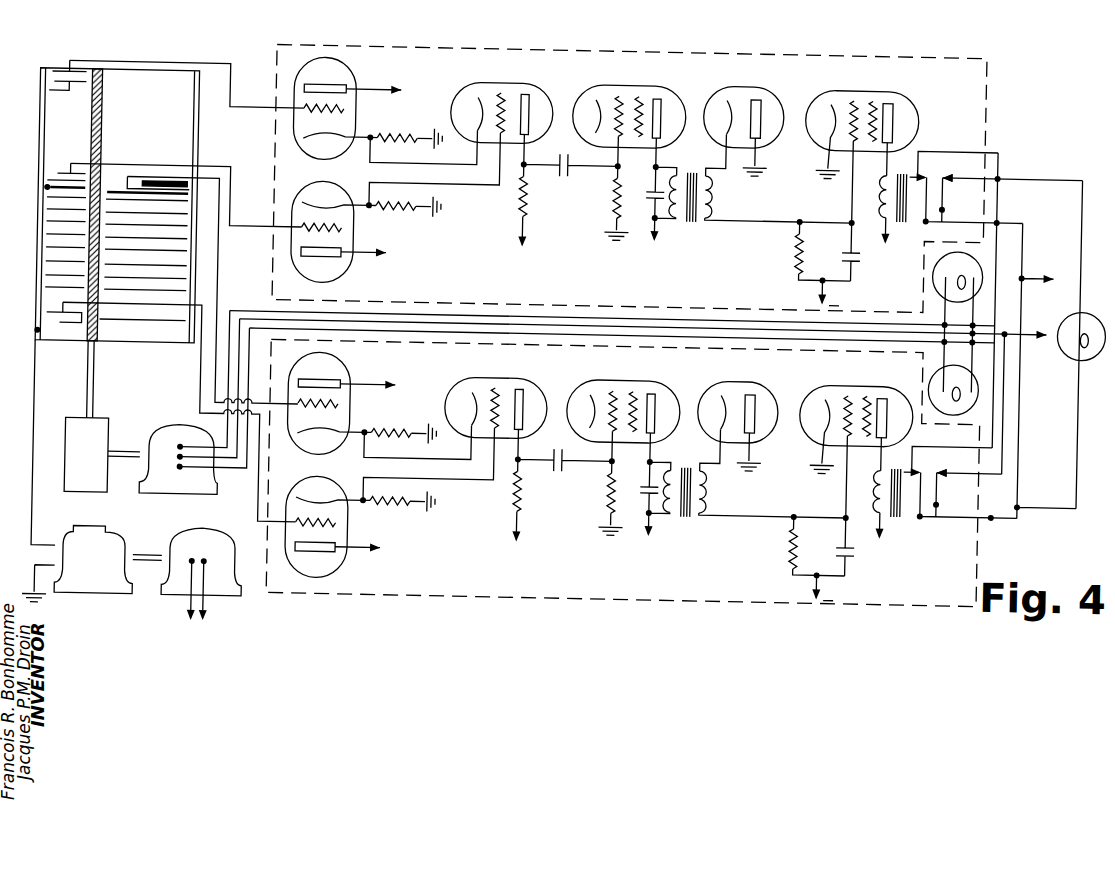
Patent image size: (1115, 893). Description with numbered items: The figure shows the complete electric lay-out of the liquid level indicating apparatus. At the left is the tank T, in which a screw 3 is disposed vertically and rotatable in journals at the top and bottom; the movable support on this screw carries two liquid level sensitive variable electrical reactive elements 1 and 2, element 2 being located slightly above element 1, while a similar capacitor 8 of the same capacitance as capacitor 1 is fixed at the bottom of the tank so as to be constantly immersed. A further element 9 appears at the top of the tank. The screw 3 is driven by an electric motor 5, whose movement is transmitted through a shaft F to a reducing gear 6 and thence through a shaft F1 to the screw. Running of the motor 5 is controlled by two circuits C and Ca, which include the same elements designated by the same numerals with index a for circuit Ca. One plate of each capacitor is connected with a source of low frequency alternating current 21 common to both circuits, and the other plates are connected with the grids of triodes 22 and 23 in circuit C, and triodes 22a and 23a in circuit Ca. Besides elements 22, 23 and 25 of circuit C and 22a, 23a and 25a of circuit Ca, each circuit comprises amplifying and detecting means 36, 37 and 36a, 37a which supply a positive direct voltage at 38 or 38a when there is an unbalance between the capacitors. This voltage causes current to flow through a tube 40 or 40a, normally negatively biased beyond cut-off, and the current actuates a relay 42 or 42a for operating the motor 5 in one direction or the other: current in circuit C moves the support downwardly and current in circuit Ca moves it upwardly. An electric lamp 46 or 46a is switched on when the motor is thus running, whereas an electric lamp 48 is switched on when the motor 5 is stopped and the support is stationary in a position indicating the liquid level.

The liquid level sensitive variable electrical reactive element 1 is at (137, 187).
The liquid level sensitive variable electrical reactive element 2 is at (58, 176).
The screw 3 is at (98, 96).
The electric motor 5 is at (169, 433).
The reducing gear 6 is at (72, 457).
The capacitor 8 is at (75, 322).
The top electrode 9 is at (58, 77).
The source of low frequency alternating current 21 is at (118, 545).
The triode 22 is at (380, 401).
The triode 22a is at (338, 72).
The triode 23 is at (389, 502).
The triode 23a is at (345, 255).
The element of circuit C 25 is at (529, 443).
The element of circuit Ca 25a is at (498, 86).
The amplifying and detecting means 36 is at (706, 446).
The amplifying and detecting means 36a is at (633, 83).
The amplifying and detecting means 37 is at (738, 412).
The amplifying and detecting means 37a is at (743, 84).
The positive direct voltage point 38 is at (806, 557).
The positive direct voltage point 38a is at (800, 212).
The tube 40 is at (855, 447).
The tube 40a is at (915, 96).
The relay 42 is at (952, 516).
The relay 42a is at (910, 165).
The electric lamp 46 is at (972, 382).
The electric lamp 46a is at (971, 246).
The electric lamp 48 is at (1083, 300).
The tank T is at (199, 116).
The shaft F is at (124, 449).
The shaft F1 is at (99, 372).
The circuit C is at (985, 537).
The circuit Ca is at (987, 69).